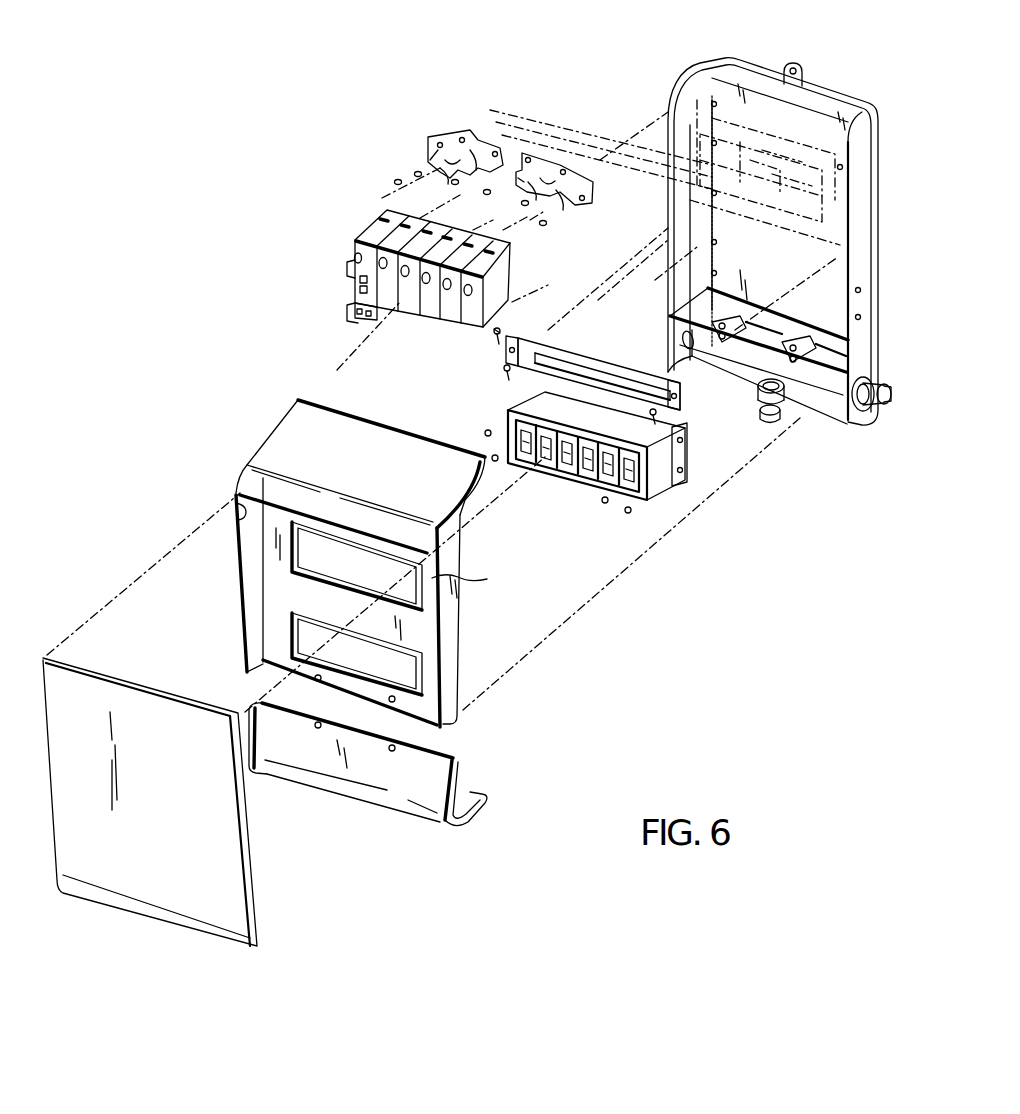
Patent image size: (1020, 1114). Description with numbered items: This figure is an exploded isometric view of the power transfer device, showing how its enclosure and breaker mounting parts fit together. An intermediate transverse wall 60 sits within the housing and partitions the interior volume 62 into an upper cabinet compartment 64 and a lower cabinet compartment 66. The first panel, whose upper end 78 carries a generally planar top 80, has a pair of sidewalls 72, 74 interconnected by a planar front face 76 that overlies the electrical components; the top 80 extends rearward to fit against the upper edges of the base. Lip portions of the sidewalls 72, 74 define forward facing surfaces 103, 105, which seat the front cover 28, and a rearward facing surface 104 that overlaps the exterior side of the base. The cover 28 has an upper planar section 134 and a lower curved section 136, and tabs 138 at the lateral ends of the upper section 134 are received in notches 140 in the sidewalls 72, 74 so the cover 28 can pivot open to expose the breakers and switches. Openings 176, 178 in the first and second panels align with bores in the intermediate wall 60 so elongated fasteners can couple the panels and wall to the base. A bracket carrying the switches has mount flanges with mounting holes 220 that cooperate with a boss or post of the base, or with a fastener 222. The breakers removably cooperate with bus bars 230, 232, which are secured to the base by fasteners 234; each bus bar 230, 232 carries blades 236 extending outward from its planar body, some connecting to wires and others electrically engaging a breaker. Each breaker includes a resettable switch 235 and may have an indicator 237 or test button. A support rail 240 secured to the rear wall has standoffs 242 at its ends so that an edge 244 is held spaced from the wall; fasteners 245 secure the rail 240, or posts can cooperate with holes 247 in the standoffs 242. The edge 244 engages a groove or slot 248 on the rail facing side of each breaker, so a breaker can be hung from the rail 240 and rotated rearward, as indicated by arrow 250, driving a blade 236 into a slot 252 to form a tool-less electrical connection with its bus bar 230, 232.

The front cover 28 is at (190, 834).
The intermediate transverse wall 60 is at (833, 366).
The interior volume 62 is at (795, 249).
The upper cabinet section or compartment 64 is at (810, 240).
The lower cabinet section or compartment 66 is at (833, 378).
The sidewall 72 is at (447, 620).
The sidewall 74 is at (253, 548).
The front face 76 is at (317, 611).
The upper end 78 is at (335, 544).
The top 80 is at (344, 455).
The forward facing surface 103 is at (437, 660).
The rearward facing surface 104 is at (460, 538).
The forward facing surface 105 is at (242, 603).
The upper planar section 134 is at (176, 810).
The lower curved section 136 is at (143, 908).
The tabs 138 is at (44, 656).
The notches 140 is at (236, 515).
The openings 176 is at (318, 681).
The openings 178 is at (265, 763).
The mounting holes 220 is at (617, 474).
The fastener 222 is at (626, 513).
The bus bar 230 is at (560, 170).
The bus bar 232 is at (498, 146).
The fasteners 234 is at (398, 180).
The switch 235 is at (355, 268).
The blades 236 is at (497, 157).
The indicator 237 is at (355, 290).
The support rail 240 is at (640, 397).
The standoffs 242 is at (525, 343).
The edge 244 is at (593, 366).
The fasteners 245 is at (505, 372).
The holes 247 is at (514, 362).
The groove or slot 248 is at (495, 335).
The arrow 250 is at (438, 205).
The slot 252 is at (385, 257).